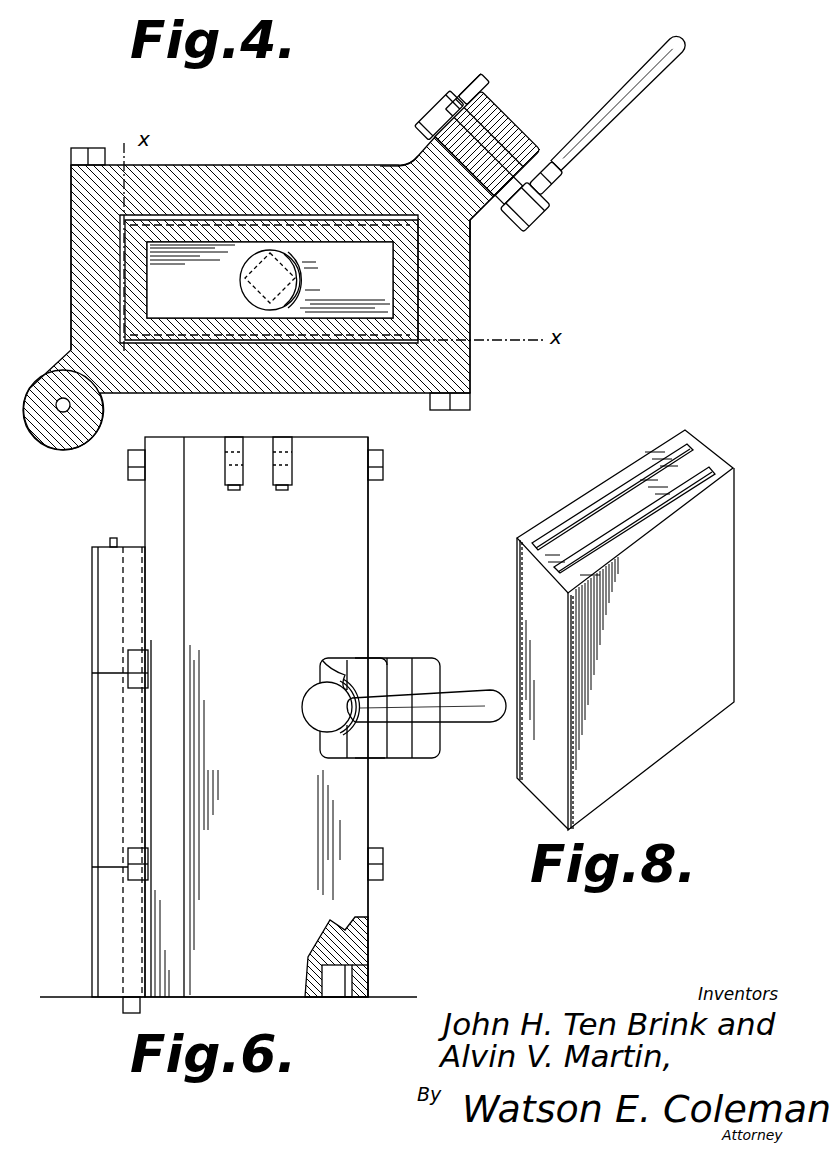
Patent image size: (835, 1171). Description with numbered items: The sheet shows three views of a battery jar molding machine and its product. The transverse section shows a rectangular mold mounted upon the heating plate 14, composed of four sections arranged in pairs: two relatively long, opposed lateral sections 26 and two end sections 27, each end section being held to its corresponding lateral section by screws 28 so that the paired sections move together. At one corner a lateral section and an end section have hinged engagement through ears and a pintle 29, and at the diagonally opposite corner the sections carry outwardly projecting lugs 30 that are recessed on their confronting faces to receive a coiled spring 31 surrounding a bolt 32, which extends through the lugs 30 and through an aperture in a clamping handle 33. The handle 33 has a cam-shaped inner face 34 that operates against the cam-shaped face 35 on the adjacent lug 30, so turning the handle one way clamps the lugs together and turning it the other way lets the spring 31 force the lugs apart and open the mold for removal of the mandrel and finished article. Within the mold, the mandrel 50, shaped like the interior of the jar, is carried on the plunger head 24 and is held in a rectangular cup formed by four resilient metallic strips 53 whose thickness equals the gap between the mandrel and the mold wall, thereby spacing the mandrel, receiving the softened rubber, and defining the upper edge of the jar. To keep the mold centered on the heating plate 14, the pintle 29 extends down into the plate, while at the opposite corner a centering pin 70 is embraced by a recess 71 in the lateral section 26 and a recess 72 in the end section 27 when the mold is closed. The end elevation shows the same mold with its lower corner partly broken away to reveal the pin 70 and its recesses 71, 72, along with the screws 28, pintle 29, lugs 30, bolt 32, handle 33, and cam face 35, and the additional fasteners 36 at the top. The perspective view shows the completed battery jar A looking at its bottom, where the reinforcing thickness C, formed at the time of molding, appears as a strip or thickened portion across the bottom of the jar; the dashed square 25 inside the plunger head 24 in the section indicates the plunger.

In FIG. 6, the heating plate 14 is at (397, 997).
In FIG. 4, the plunger head 24 is at (295, 280).
In FIG. 4, the square section of rod 25 is at (238, 292).
In FIG. 4, the lateral sections 26 is at (196, 168).
In FIG. 6, the lateral sections 26 is at (152, 508).
In FIG. 4, the end sections 27 is at (78, 278).
In FIG. 6, the end sections 27 is at (357, 578).
In FIG. 4, the screws 28 is at (128, 137).
In FIG. 6, the screws 28 is at (128, 470).
In FIG. 4, the pintle 29 is at (58, 413).
In FIG. 6, the pintle 29 is at (150, 547).
In FIG. 4, the lugs 30 is at (477, 122).
In FIG. 6, the lugs 30 is at (377, 668).
In FIG. 4, the coiled spring 31 is at (486, 96).
In FIG. 4, the bolt 32 is at (445, 120).
In FIG. 6, the bolt 32 is at (313, 715).
In FIG. 4, the clamping handle 33 is at (600, 112).
In FIG. 6, the clamping handle 33 is at (453, 723).
In FIG. 4, the cam-shaped inner face 34 is at (538, 228).
In FIG. 6, the cam-shaped inner face 34 is at (337, 658).
In FIG. 4, the cam-shaped face 35 is at (545, 178).
In FIG. 6, the cam-shaped face 35 is at (368, 758).
In FIG. 6, the bolts 36 is at (280, 487).
In FIG. 4, the mandrel 50 is at (137, 289).
In FIG. 4, the metallic strips 53 is at (213, 217).
In FIG. 4, the centering pin 70 is at (428, 152).
In FIG. 6, the centering pin 70 is at (353, 972).
In FIG. 4, the recess 71 is at (397, 162).
In FIG. 6, the recess 71 is at (370, 963).
In FIG. 4, the recess 72 is at (472, 233).
In FIG. 6, the recess 72 is at (307, 997).
In FIG. 8, the battery jar A is at (625, 630).
In FIG. 8, the reinforcing thickness C is at (613, 503).